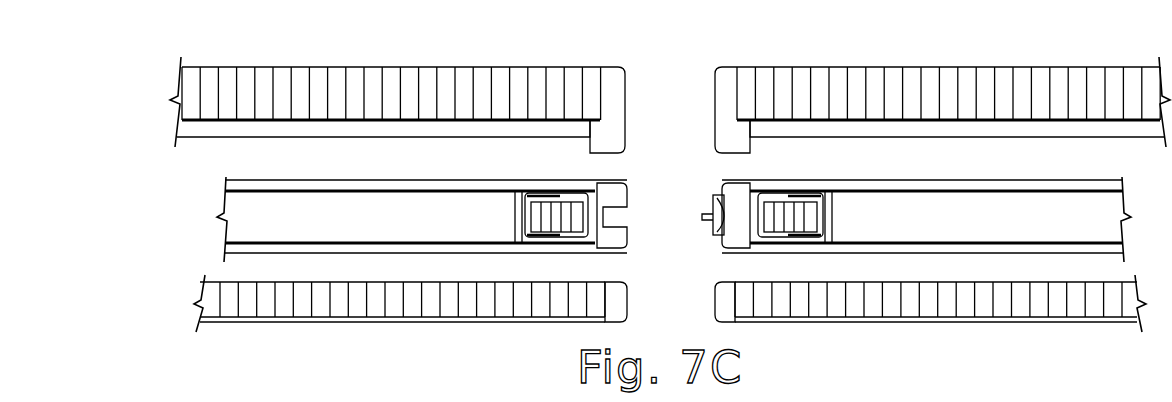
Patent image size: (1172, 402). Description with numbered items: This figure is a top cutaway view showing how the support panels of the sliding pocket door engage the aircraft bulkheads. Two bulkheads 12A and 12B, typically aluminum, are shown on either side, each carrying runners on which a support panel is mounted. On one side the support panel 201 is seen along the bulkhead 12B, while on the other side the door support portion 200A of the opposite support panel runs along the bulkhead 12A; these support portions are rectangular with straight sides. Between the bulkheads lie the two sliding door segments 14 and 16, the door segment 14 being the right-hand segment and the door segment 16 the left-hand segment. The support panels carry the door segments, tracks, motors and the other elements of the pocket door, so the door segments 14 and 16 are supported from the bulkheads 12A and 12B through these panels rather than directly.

The bulkhead 12A is at (942, 103).
The bulkhead 12B is at (397, 101).
The door segment 14 is at (916, 219).
The door segment 16 is at (422, 219).
The door support portion 200A is at (918, 134).
The support panel 201 is at (366, 128).